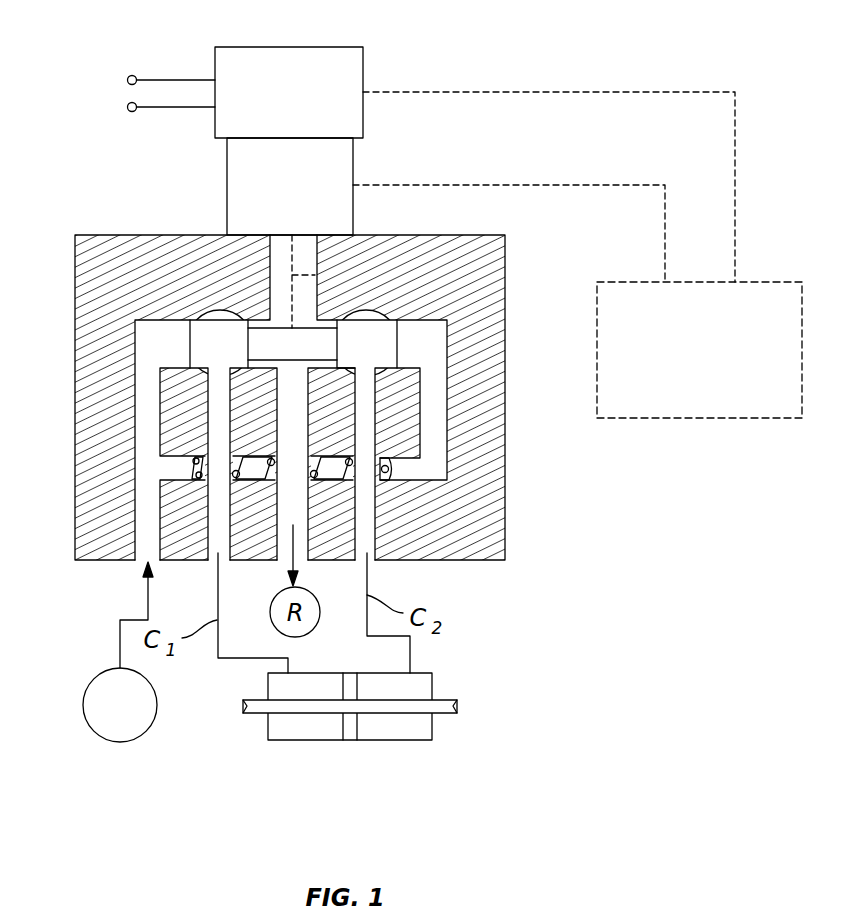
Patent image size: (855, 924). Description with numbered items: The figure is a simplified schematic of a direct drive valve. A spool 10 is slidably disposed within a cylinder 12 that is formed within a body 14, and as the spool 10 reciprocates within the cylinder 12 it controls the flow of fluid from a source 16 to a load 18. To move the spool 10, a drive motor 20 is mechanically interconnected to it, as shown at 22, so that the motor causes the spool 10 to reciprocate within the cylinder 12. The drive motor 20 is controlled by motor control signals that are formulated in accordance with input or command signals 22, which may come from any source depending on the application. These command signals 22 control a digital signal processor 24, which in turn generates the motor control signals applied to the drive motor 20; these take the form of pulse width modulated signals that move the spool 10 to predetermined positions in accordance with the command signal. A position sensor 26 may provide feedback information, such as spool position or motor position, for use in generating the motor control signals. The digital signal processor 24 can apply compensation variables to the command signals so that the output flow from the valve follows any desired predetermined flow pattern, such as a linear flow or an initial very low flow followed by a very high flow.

The spool 10 is at (188, 358).
The cylinder 12 is at (438, 325).
The body 14 is at (507, 422).
The source 16 is at (82, 702).
The load 18 is at (390, 740).
The drive motor 20 is at (227, 190).
The mechanical interconnection / command signals 22 is at (315, 275).
The digital signal processor 24 is at (327, 46).
The position sensor 26 is at (722, 418).